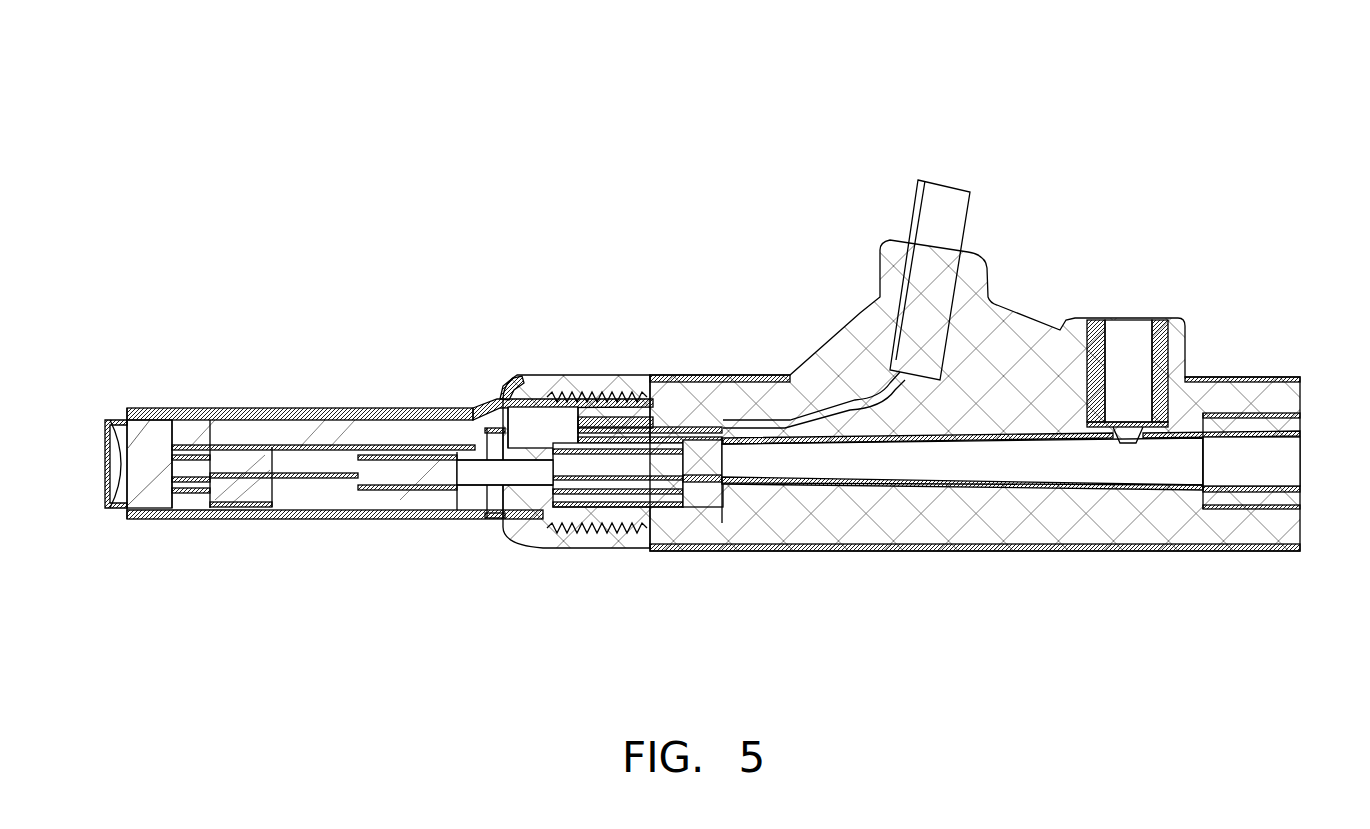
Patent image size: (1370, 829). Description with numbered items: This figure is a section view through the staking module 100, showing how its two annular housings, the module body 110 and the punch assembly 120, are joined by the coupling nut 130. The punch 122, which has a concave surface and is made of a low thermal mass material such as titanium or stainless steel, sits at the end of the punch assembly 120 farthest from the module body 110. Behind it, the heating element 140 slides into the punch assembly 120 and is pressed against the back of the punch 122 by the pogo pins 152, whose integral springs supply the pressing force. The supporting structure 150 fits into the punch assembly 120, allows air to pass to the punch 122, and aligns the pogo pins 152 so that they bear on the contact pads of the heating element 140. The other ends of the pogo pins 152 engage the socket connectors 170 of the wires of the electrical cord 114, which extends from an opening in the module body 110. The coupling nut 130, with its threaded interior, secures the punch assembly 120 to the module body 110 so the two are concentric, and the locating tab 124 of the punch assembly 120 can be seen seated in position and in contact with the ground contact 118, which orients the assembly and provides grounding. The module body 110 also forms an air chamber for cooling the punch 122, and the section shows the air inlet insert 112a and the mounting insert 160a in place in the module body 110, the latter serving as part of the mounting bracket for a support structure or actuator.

The staking module 100 is at (365, 145).
The module body 110 is at (1008, 578).
The air inlet insert 112a is at (1160, 330).
The electrical cord 114 is at (932, 205).
The ground contact 118 is at (600, 410).
The punch assembly 120 is at (295, 567).
The punch 122 is at (114, 422).
The locating tab 124 is at (493, 410).
The coupling nut 130 is at (523, 395).
The heating element 140 is at (150, 488).
The supporting structure 150 is at (312, 433).
The pogo pins 152 is at (192, 540).
The mounting insert 160a is at (1285, 497).
The socket connectors 170 is at (500, 453).